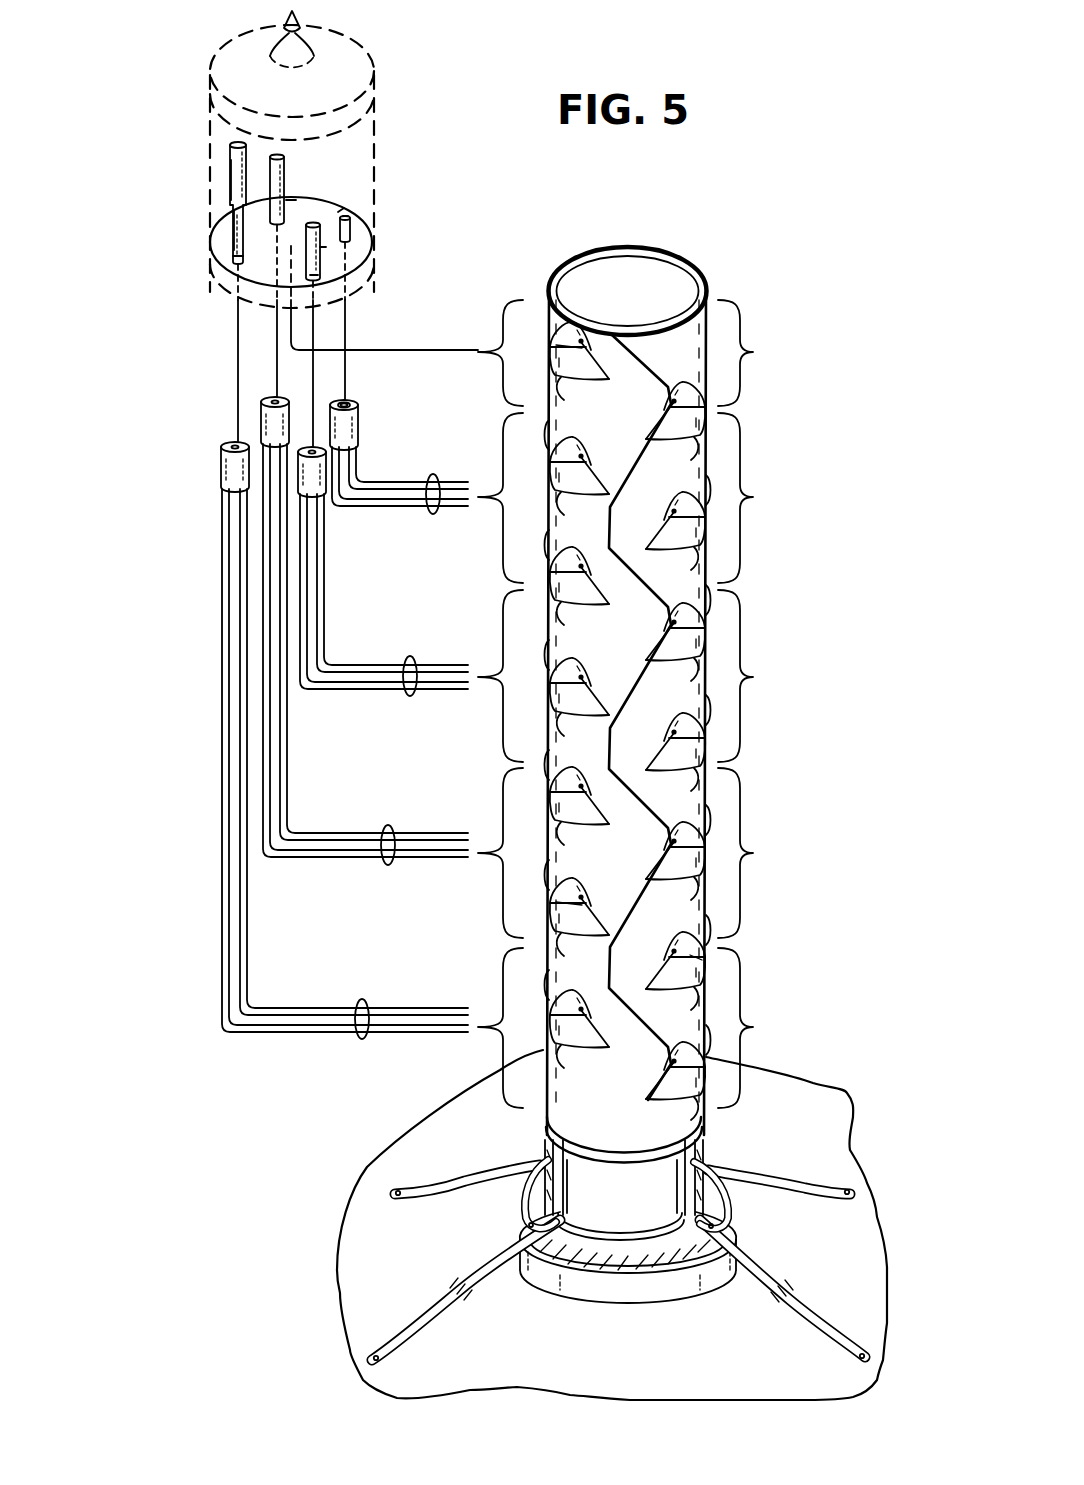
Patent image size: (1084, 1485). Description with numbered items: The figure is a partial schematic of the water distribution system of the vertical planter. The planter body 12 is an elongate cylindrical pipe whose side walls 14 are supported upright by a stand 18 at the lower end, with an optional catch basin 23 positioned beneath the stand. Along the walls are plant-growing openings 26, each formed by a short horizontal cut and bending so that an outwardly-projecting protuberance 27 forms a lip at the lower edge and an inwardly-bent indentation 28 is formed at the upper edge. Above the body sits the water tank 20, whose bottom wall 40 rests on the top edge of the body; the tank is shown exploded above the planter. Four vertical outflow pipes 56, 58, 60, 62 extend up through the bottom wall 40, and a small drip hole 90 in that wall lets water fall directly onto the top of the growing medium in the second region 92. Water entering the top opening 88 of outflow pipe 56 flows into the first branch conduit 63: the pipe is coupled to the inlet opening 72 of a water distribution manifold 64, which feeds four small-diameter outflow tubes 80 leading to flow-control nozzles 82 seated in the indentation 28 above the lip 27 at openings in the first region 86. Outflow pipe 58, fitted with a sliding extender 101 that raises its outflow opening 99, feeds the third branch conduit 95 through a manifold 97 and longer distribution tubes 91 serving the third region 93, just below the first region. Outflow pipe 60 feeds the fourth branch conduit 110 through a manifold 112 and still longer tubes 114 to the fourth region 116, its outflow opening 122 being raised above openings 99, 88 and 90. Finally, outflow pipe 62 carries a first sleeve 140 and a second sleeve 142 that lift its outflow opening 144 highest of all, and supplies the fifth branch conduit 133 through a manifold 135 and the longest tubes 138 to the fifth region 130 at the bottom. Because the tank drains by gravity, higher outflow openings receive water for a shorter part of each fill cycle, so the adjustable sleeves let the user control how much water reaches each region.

The planter body 12 is at (706, 620).
The side walls 14 is at (613, 278).
The stand 18 is at (466, 1277).
The water tank 20 is at (374, 136).
The catch basin 23 is at (605, 1298).
The openings 26 is at (665, 745).
The protuberance 27 is at (578, 396).
The indentation 28 is at (577, 326).
The bottom wall 40 is at (340, 213).
The outflow pipe 56 is at (352, 223).
The outflow pipe 58 is at (318, 274).
The outflow pipe 60 is at (292, 200).
The outflow pipe 62 is at (240, 258).
The first branch conduit 63 is at (366, 426).
The water distribution manifold 64 is at (358, 426).
The inlet opening 72 is at (346, 402).
The outflow tubes 80 is at (433, 514).
The flow-control nozzle 82 is at (663, 522).
The first region 86 is at (754, 497).
The top opening 88 is at (348, 218).
The drip hole 90 is at (290, 244).
The distribution tubes 91 is at (410, 696).
The second region 92 is at (754, 352).
The third region 93 is at (754, 677).
The third branch conduit 95 is at (331, 518).
The manifold 97 is at (312, 445).
The outflow opening 99 is at (315, 223).
The extender 101 is at (326, 247).
The fourth branch conduit 110 is at (290, 698).
The manifold 112 is at (263, 420).
The distribution tubes 114 is at (388, 865).
The fourth region 116 is at (754, 853).
The outflow opening 122 is at (278, 153).
The fifth region 130 is at (754, 1027).
The fifth branch conduit 133 is at (210, 522).
The manifold 135 is at (222, 467).
The distribution tubes 138 is at (362, 1039).
The first sleeve 140 is at (238, 225).
The second sleeve 142 is at (232, 185).
The outflow opening 144 is at (232, 145).